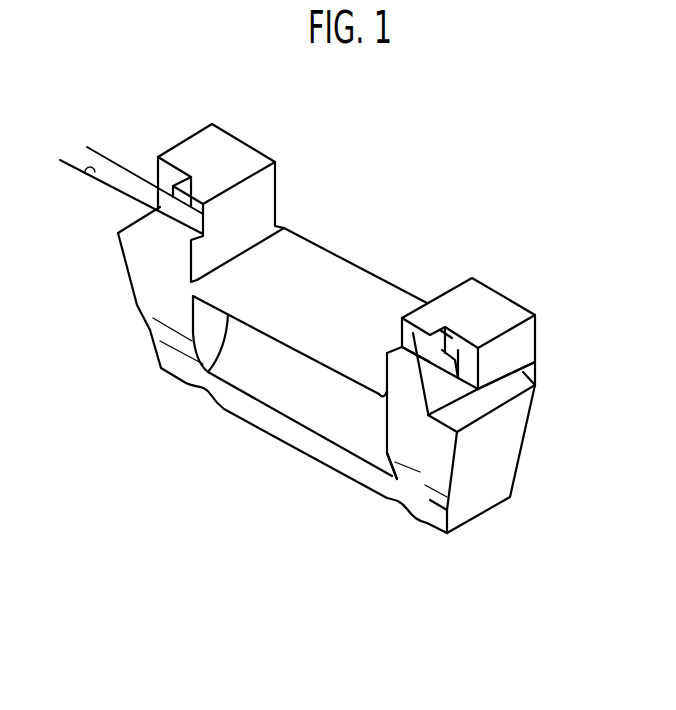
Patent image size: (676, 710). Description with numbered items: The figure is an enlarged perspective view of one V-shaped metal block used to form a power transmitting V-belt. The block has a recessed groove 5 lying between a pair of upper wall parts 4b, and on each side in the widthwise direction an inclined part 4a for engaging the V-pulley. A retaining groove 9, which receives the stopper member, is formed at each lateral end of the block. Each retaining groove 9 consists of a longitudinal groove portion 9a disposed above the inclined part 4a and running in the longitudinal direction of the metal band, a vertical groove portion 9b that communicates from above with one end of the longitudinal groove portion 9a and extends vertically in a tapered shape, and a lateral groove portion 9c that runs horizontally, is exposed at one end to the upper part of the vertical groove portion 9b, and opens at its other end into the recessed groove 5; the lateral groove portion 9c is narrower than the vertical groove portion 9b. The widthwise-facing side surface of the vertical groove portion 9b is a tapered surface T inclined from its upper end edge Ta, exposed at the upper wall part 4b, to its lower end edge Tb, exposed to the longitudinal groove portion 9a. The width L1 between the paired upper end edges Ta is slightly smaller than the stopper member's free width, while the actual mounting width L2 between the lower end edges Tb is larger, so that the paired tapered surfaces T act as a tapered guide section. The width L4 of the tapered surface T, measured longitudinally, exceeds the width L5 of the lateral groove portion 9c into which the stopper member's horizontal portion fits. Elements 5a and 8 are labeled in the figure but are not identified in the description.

The inclined part 4a is at (507, 458).
The upper wall part 4b is at (505, 310).
The recessed groove 5 is at (258, 207).
The plate surface 5a is at (360, 283).
The recess 8 is at (250, 380).
The retaining groove 9 is at (533, 372).
The longitudinal groove portion 9a is at (500, 393).
The vertical groove portion 9b is at (467, 363).
The lateral groove portion 9c is at (413, 337).
The tapered surface T is at (442, 350).
The upper end edge Ta is at (433, 332).
The lower end edge Tb is at (440, 400).
The width between upper end edges L1 is at (430, 563).
The actual mounting width L2 is at (150, 297).
The width of the tapered surface L4 is at (87, 147).
The width of the lateral groove portion L5 is at (118, 168).